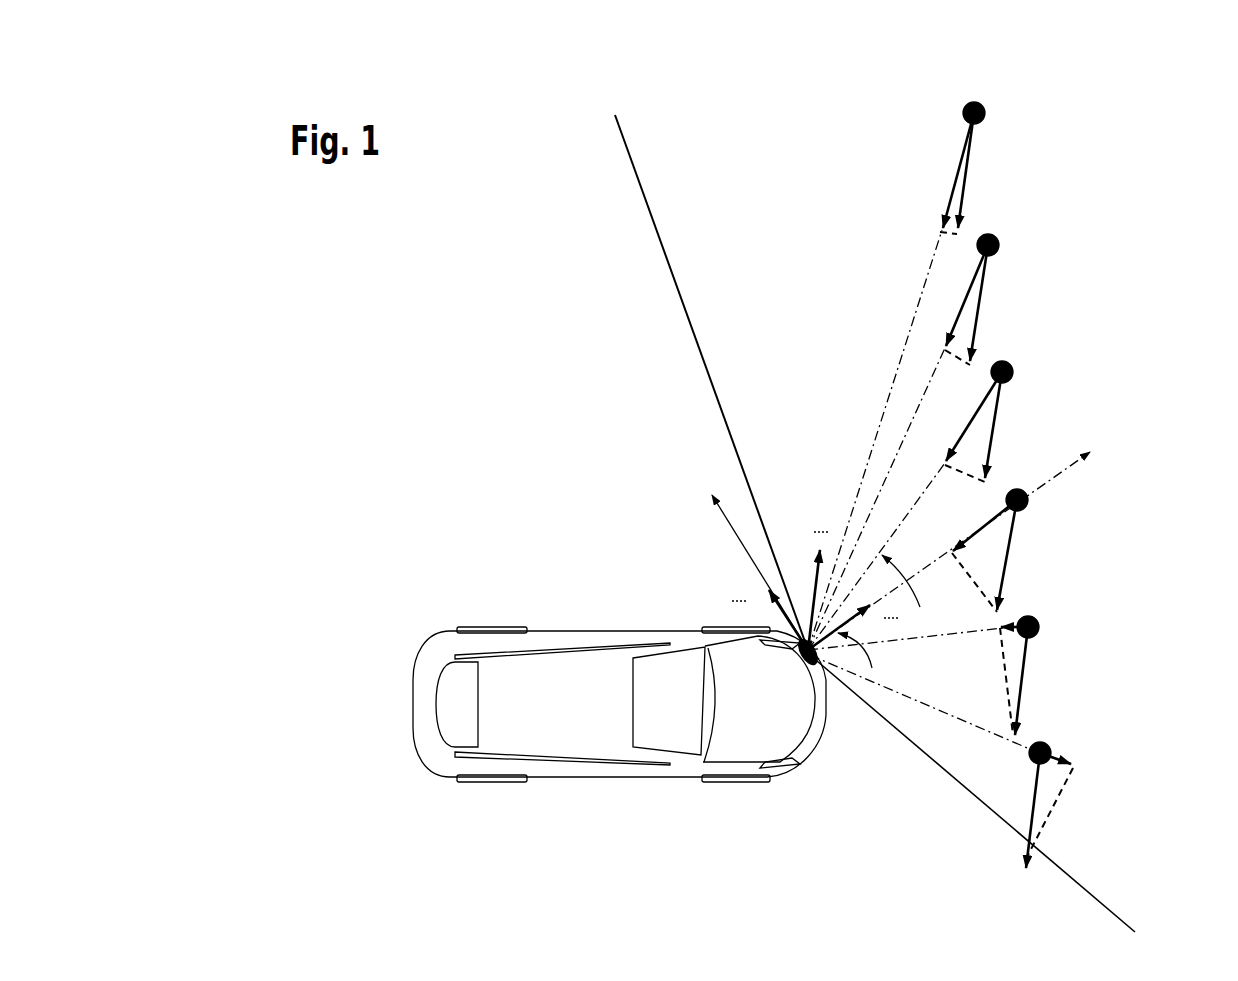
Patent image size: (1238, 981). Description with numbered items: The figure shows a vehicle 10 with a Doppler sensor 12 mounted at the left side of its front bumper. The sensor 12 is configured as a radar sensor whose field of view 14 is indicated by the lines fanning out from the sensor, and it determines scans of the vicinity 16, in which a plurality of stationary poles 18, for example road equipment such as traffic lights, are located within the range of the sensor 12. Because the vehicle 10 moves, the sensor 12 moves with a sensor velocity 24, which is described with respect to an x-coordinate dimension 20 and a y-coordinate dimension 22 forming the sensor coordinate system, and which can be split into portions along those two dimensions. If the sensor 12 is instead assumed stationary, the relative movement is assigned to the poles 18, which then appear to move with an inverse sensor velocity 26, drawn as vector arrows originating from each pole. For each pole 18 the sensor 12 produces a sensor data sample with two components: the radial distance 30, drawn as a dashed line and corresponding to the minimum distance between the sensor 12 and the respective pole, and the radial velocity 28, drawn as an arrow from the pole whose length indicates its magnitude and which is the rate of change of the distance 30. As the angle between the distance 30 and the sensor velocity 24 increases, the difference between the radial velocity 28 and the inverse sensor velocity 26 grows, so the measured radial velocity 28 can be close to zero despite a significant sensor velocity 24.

The vehicle 10 is at (455, 800).
The Doppler sensor 12 is at (822, 690).
The field of view 14 is at (660, 253).
The vicinity 16 is at (1178, 298).
The poles 18 is at (974, 102).
The x-coordinate dimension 20 is at (1062, 470).
The y-coordinate dimension 22 is at (735, 537).
The sensor velocity 24 is at (791, 492).
The inverse sensor velocity 26 is at (968, 162).
The radial velocity 28 is at (957, 172).
The radial distance 30 is at (912, 300).